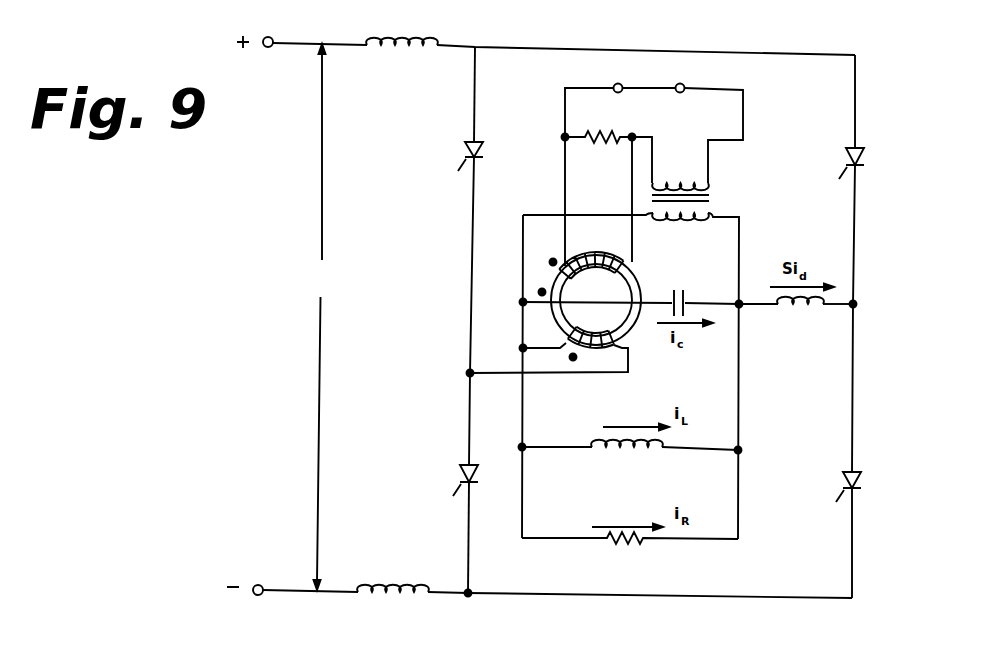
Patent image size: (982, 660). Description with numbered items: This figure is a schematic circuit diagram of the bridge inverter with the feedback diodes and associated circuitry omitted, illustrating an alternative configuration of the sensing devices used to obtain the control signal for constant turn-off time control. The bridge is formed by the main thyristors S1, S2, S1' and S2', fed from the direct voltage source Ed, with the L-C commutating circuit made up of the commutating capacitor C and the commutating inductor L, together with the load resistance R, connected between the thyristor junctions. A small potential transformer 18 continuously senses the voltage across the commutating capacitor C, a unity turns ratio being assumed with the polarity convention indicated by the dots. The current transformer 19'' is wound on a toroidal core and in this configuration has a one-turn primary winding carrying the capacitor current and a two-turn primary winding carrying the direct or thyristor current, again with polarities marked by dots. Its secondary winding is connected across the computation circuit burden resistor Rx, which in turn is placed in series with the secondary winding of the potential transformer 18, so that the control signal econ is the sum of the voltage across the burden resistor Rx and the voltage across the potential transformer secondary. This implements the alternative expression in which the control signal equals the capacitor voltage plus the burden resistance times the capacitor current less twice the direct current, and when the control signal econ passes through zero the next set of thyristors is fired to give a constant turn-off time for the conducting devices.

The potential transformer 18 is at (680, 180).
The current transformer 19'' is at (590, 293).
The main thyristor S1 is at (459, 109).
The main thyristor S2 is at (844, 117).
The main thyristor S1' is at (837, 534).
The main thyristor S2' is at (451, 528).
The burden resistor Rx is at (607, 148).
The commutating capacitor C is at (631, 297).
The commutating inductor L is at (630, 457).
The load resistance R is at (630, 552).
The commutating inductor Lc is at (796, 318).
The DC source voltage Ed is at (320, 317).
The control signal econ is at (654, 131).